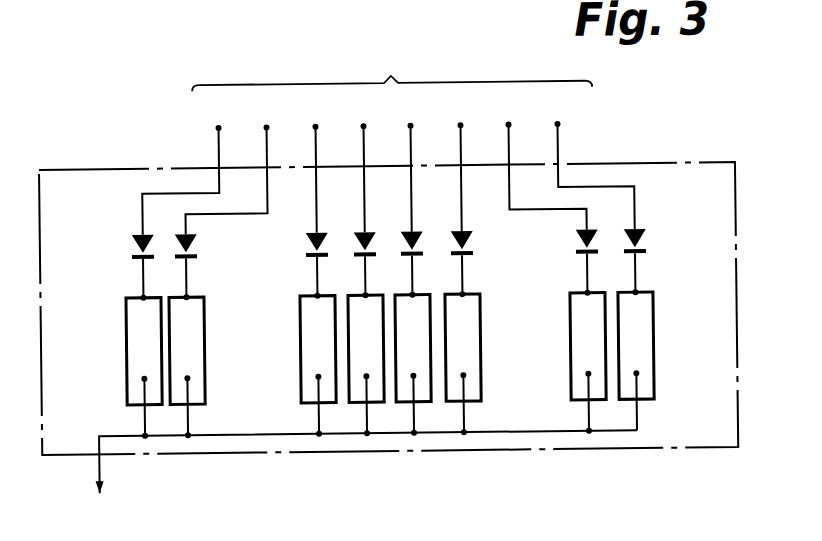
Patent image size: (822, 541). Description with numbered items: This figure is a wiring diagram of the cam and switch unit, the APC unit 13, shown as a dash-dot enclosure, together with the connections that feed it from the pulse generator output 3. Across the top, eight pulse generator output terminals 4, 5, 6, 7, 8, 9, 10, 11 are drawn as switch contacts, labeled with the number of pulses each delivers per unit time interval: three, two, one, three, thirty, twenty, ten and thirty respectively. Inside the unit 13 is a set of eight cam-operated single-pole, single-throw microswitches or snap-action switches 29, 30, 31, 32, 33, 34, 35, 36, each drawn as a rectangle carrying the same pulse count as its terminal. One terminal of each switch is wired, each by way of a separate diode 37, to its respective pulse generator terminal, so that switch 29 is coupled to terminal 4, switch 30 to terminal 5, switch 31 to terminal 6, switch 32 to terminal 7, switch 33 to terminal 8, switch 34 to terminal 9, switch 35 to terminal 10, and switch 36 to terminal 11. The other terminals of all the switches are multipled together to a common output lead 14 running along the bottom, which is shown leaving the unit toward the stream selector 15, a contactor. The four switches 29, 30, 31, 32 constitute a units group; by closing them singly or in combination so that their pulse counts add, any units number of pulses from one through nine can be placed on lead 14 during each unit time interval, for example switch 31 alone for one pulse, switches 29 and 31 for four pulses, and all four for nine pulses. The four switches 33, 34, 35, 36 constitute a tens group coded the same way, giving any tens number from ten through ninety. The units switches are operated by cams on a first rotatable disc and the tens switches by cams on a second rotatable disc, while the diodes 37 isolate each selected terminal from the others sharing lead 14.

The pulse generator output 3 is at (518, 77).
The pulse generator output terminal 4 is at (219, 130).
The pulse generator output terminal 5 is at (267, 130).
The pulse generator output terminal 6 is at (316, 130).
The pulse generator output terminal 7 is at (364, 130).
The pulse generator output terminal 8 is at (411, 130).
The pulse generator output terminal 9 is at (461, 130).
The pulse generator output terminal 10 is at (509, 130).
The pulse generator output terminal 11 is at (558, 130).
The APC unit 13 is at (681, 523).
The output lead 14 is at (99, 471).
The stream selector (contactor) 15 is at (134, 517).
The switch 29 is at (125, 391).
The switch 30 is at (196, 392).
The switch 31 is at (304, 383).
The switch 32 is at (354, 389).
The switch 33 is at (418, 394).
The switch 34 is at (472, 395).
The switch 35 is at (578, 386).
The switch 36 is at (645, 397).
The diode 37 is at (183, 236).